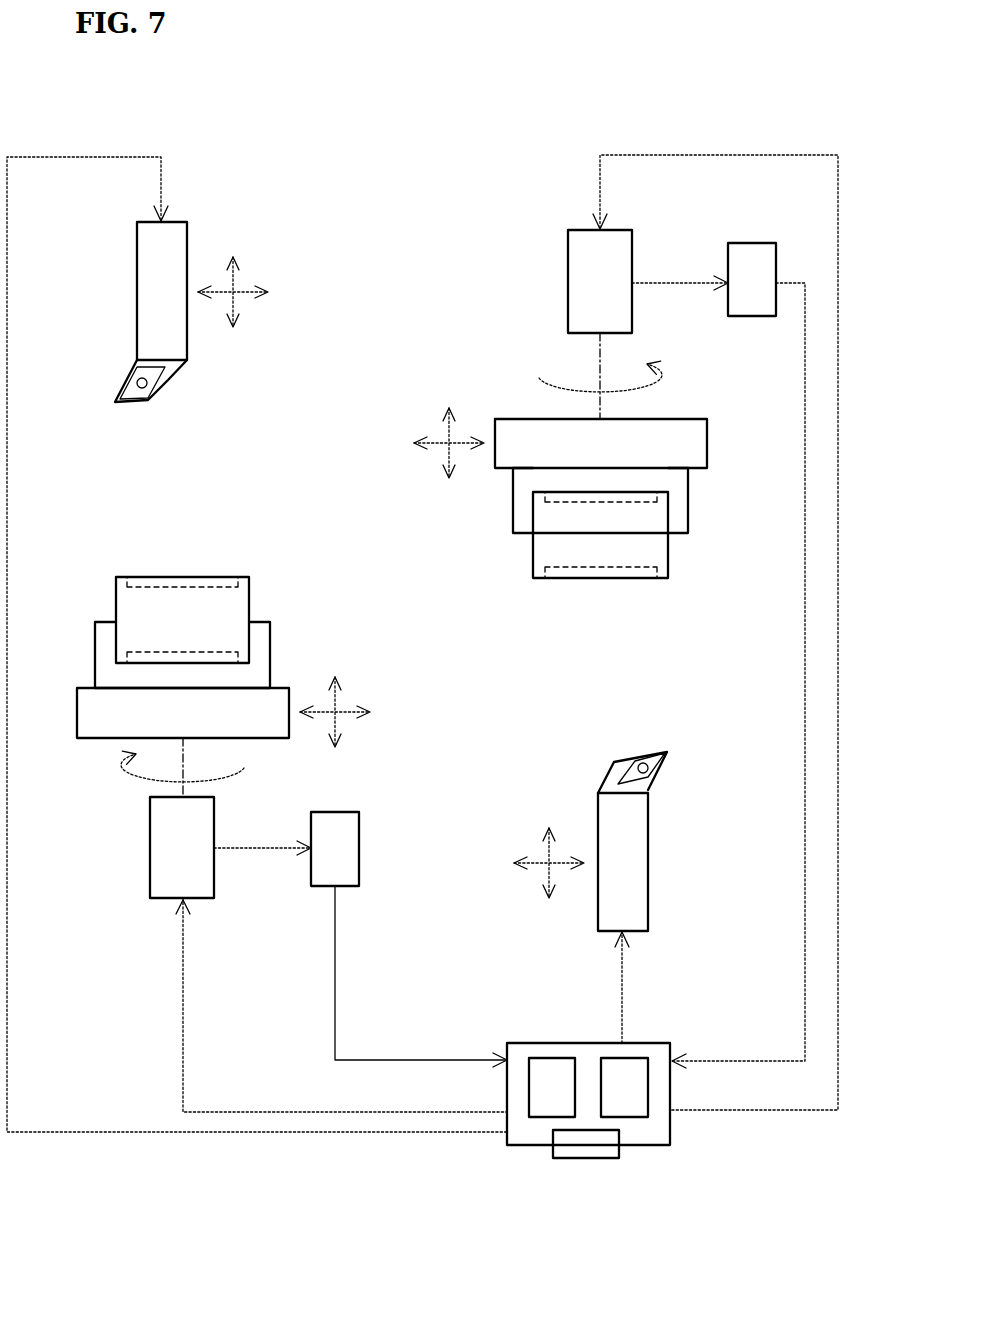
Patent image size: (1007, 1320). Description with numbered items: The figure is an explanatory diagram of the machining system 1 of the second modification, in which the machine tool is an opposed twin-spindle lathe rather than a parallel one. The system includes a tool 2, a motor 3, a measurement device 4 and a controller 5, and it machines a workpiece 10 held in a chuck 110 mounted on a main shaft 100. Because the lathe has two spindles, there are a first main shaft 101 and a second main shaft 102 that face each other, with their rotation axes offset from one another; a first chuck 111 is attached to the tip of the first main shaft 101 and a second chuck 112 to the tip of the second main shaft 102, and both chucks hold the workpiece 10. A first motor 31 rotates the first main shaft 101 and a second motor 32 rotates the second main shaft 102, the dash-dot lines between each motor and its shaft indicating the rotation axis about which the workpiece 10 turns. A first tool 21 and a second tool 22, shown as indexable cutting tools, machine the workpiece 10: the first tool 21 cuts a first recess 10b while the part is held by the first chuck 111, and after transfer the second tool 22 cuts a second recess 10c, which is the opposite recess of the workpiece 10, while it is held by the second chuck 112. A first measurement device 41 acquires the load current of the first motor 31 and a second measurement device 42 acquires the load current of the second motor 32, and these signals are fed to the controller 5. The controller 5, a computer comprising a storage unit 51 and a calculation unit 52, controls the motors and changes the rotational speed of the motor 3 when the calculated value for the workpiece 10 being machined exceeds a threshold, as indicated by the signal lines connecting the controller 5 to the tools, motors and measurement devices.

The machining system 1 is at (125, 141).
The tool 2 is at (403, 576).
The first tool 21 is at (150, 296).
The second tool 22 is at (628, 853).
The motor 3 is at (393, 671).
The first motor 31 is at (168, 860).
The second motor 32 is at (605, 280).
The measurement device 4 is at (533, 627).
The first measurement device 41 is at (325, 890).
The second measurement device 42 is at (745, 258).
The controller 5 is at (584, 1069).
The storage unit 51 is at (540, 1085).
The calculation unit 52 is at (628, 1082).
The workpiece 10 is at (140, 612).
The first recess 10b is at (137, 587).
The second recess 10c is at (138, 663).
The main shaft 100 is at (401, 583).
The first main shaft 101 is at (117, 723).
The second main shaft 102 is at (667, 430).
The chuck 110 is at (391, 578).
The first chuck 111 is at (262, 665).
The second chuck 112 is at (525, 492).